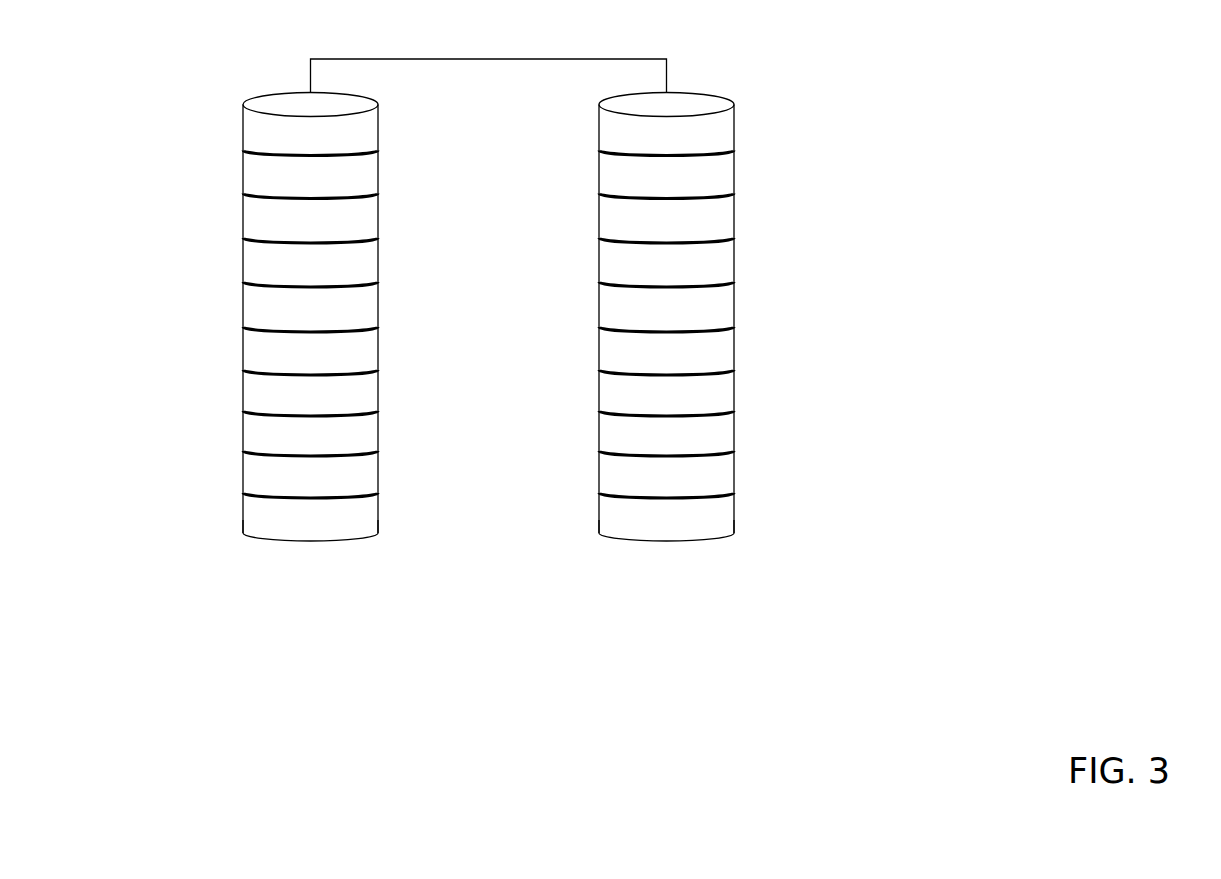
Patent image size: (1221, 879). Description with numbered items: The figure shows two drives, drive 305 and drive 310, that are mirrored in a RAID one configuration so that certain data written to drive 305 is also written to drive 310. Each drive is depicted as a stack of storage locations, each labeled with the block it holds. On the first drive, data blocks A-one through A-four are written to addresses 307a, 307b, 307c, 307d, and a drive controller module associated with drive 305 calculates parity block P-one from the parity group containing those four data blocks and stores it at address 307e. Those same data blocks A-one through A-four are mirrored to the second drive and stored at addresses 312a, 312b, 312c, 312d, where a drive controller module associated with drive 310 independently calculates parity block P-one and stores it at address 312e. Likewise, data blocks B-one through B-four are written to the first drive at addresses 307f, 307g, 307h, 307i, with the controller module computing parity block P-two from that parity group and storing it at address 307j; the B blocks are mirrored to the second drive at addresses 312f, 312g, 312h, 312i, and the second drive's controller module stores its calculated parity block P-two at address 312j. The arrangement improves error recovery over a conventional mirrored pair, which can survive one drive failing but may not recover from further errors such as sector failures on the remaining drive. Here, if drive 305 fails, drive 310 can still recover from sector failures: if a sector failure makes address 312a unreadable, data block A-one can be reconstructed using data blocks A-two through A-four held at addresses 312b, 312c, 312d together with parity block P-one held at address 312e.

The drive 305 is at (261, 59).
The drive 310 is at (721, 59).
The address 307a is at (390, 129).
The address 307b is at (390, 173).
The address 307c is at (390, 216).
The address 307d is at (390, 260).
The address 307e is at (390, 306).
The address 307f is at (390, 349).
The address 307g is at (390, 391).
The address 307h is at (390, 433).
The address 307i is at (390, 474).
The address 307j is at (390, 512).
The address 312a is at (747, 129).
The address 312b is at (747, 173).
The address 312c is at (747, 216).
The address 312d is at (747, 260).
The address 312e is at (747, 306).
The address 312f is at (747, 349).
The address 312g is at (747, 391).
The address 312h is at (747, 433).
The address 312i is at (747, 474).
The address 312j is at (747, 512).